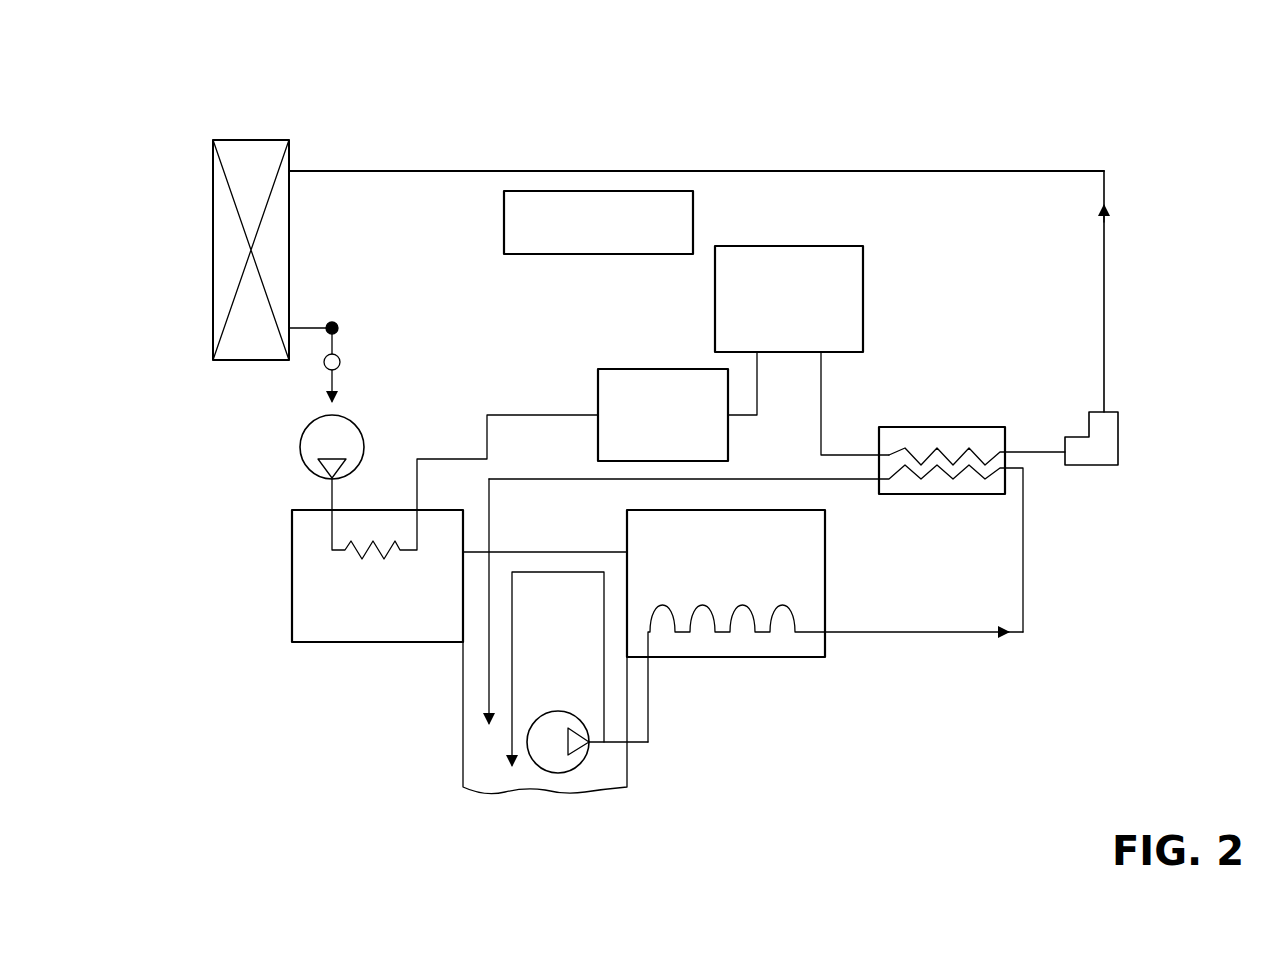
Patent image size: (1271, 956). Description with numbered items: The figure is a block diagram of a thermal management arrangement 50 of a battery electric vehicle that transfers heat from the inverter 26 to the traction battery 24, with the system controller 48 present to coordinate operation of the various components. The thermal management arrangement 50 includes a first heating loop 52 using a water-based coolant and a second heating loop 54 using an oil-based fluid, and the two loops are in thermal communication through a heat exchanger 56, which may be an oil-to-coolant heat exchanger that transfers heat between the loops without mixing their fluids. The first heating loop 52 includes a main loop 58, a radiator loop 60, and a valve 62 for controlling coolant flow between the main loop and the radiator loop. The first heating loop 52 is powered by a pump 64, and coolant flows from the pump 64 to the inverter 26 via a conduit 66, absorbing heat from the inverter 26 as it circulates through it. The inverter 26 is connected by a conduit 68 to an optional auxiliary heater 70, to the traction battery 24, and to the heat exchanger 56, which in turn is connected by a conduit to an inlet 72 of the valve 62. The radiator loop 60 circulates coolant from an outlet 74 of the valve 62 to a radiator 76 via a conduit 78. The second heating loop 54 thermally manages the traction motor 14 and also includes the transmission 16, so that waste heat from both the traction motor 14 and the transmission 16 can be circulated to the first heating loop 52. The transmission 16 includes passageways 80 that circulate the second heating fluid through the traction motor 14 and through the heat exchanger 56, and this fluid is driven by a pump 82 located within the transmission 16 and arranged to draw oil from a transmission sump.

The traction motor 14 is at (825, 578).
The transmission 16 is at (612, 790).
The traction battery 24 is at (863, 300).
The inverter 26 is at (292, 575).
The system controller 48 is at (504, 222).
The thermal management arrangement 50 is at (845, 68).
The first heating loop 52 is at (1009, 168).
The second heating loop 54 is at (916, 646).
The heat exchanger 56 is at (940, 427).
The main loop 58 is at (455, 459).
The radiator loop 60 is at (410, 171).
The valve 62 is at (1118, 437).
The pump 64 is at (300, 447).
The conduit 66 is at (332, 494).
The conduit 68 is at (543, 415).
The auxiliary heater 70 is at (660, 369).
The inlet 72 is at (1065, 455).
The outlet 74 is at (1098, 412).
The radiator 76 is at (249, 140).
The conduit 78 is at (925, 171).
The passageways 80 is at (690, 632).
The pump 82 is at (558, 773).